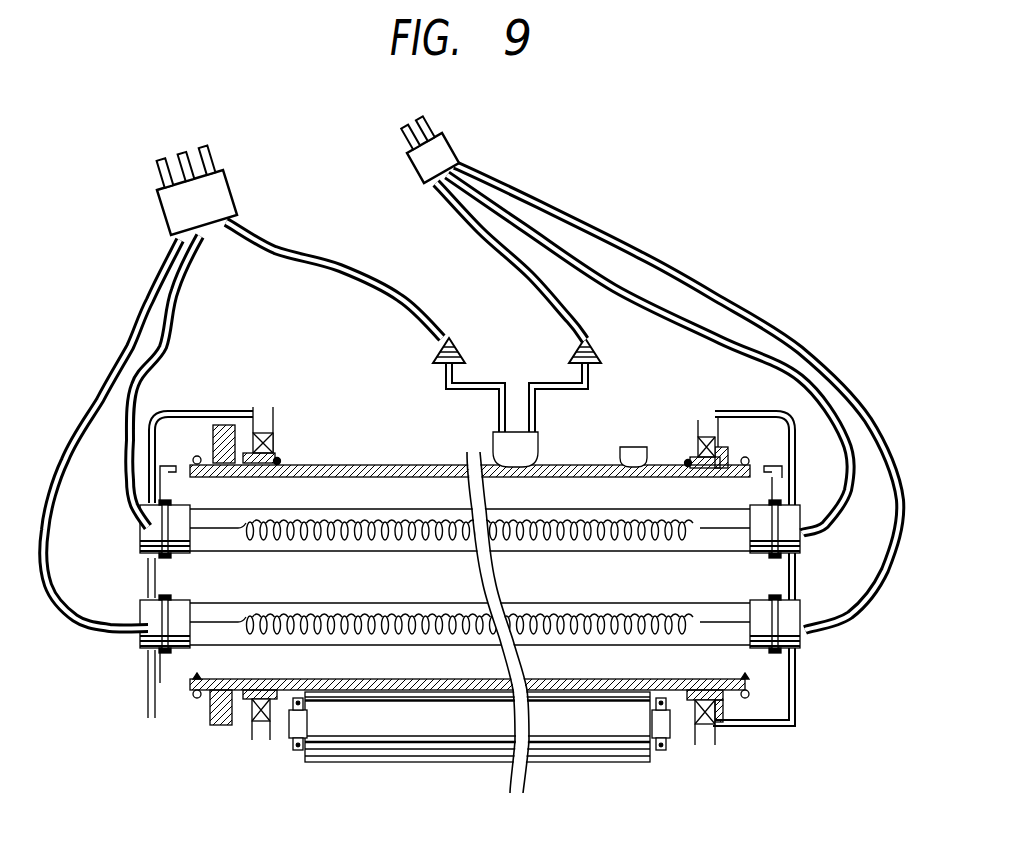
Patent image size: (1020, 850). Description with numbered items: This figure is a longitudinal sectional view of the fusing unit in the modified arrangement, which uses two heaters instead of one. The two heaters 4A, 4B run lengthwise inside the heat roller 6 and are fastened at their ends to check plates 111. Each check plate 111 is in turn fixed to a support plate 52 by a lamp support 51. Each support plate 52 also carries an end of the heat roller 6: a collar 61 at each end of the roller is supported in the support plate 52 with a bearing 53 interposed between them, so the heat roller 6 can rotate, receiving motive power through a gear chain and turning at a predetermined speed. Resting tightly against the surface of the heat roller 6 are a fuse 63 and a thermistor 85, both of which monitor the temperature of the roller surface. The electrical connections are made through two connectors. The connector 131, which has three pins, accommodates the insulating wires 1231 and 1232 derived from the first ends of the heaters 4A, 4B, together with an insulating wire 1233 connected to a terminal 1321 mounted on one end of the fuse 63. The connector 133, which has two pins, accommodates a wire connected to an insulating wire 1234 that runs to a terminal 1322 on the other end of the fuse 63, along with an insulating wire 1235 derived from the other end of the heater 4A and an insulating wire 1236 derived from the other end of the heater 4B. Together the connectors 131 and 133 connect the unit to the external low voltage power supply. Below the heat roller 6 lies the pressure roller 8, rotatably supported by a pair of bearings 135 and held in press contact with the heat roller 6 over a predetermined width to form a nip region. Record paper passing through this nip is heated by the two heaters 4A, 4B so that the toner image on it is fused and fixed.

The connector 131 is at (220, 197).
The connector 133 is at (440, 160).
The insulating wire 1231 is at (127, 510).
The insulating wire 1232 is at (80, 608).
The insulating wire 1233 is at (298, 262).
The insulating wire 1234 is at (508, 268).
The insulating wire 1235 is at (614, 289).
The insulating wire 1236 is at (697, 292).
The terminal 1321 is at (434, 350).
The terminal 1322 is at (572, 345).
The lamp support 51 is at (205, 408).
The support plate 52 is at (263, 420).
The bearing 53 is at (277, 450).
The collar 61 is at (280, 463).
The heat roller 6 is at (421, 462).
The fuse 63 is at (540, 452).
The thermistor 85 is at (633, 446).
The check plate 111 is at (172, 477).
The heater 4A is at (578, 556).
The heater 4B is at (330, 603).
The bearing 135 is at (297, 753).
The pressure roller 8 is at (555, 750).